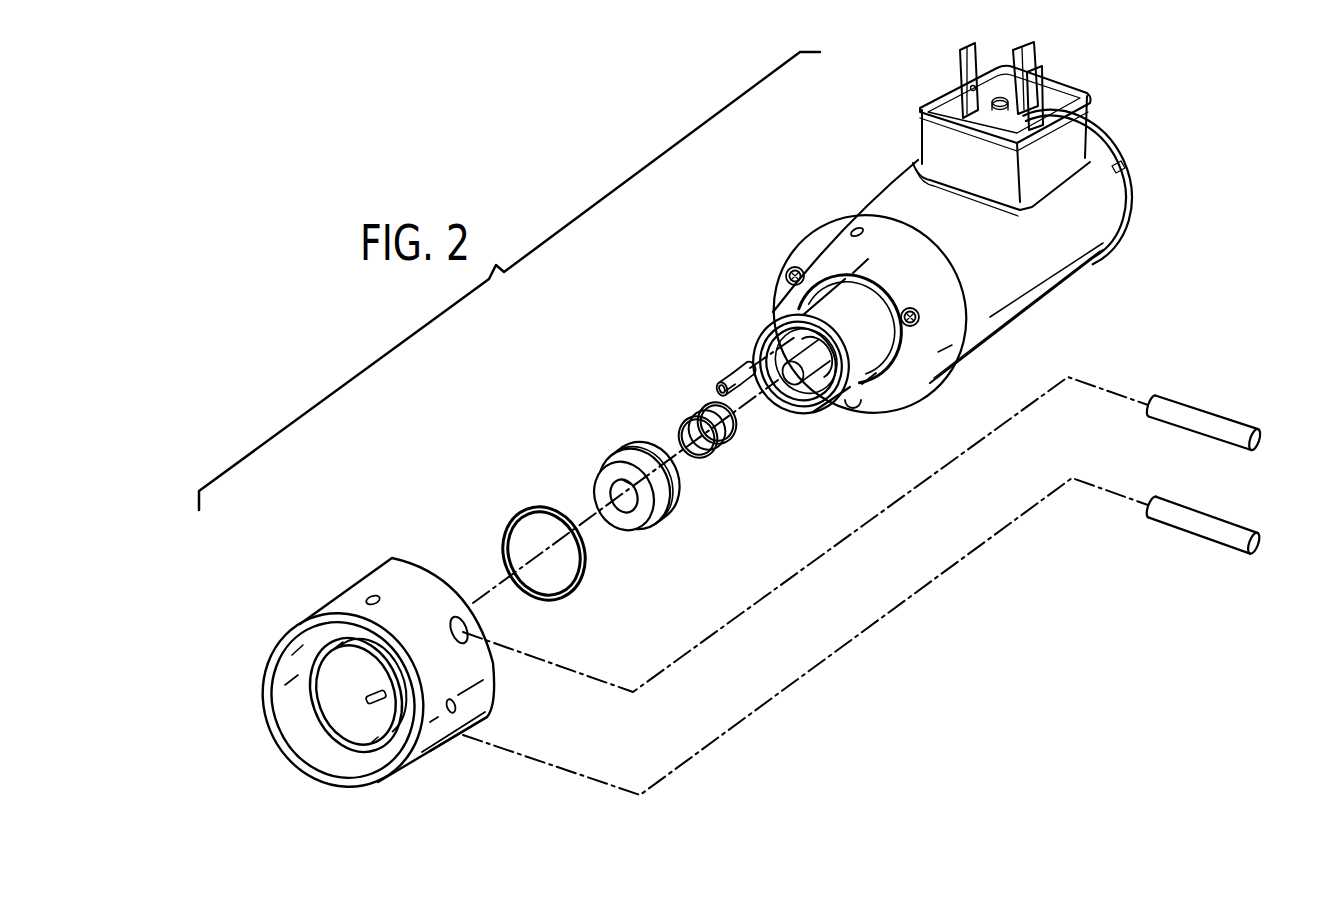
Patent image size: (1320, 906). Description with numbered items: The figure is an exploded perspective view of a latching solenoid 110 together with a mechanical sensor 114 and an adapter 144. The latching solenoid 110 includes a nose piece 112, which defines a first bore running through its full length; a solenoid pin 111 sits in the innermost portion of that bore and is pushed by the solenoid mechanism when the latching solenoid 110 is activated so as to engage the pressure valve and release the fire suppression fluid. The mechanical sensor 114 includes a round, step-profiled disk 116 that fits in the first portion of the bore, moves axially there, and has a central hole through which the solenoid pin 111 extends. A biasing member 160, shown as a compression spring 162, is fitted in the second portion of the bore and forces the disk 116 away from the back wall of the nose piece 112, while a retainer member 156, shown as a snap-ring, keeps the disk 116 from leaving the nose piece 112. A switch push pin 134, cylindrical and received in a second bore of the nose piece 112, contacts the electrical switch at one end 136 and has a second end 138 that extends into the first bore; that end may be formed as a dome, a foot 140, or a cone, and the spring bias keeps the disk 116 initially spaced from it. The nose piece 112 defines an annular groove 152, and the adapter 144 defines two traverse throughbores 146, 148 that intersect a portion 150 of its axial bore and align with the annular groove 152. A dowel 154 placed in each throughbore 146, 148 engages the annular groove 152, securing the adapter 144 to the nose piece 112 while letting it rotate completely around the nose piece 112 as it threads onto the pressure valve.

The latching solenoid 110 is at (904, 185).
The solenoid pin 111 is at (813, 376).
The nose piece 112 is at (832, 237).
The mechanical sensor 114 is at (574, 418).
The disk 116 is at (674, 502).
The switch push pin 134 is at (717, 378).
The one end of switch push pin 136 is at (746, 352).
The second end of switch push pin 138 is at (711, 370).
The foot 140 is at (718, 393).
The adapter 144 is at (338, 594).
The traverse throughbore 146 is at (466, 627).
The traverse throughbore 148 is at (456, 735).
The portion of axial bore 150 is at (368, 693).
The annular groove 152 is at (877, 373).
The dowel 154 is at (1200, 436).
The retainer member 156 is at (517, 517).
The biasing member 160 is at (718, 464).
The compression spring 162 is at (733, 432).